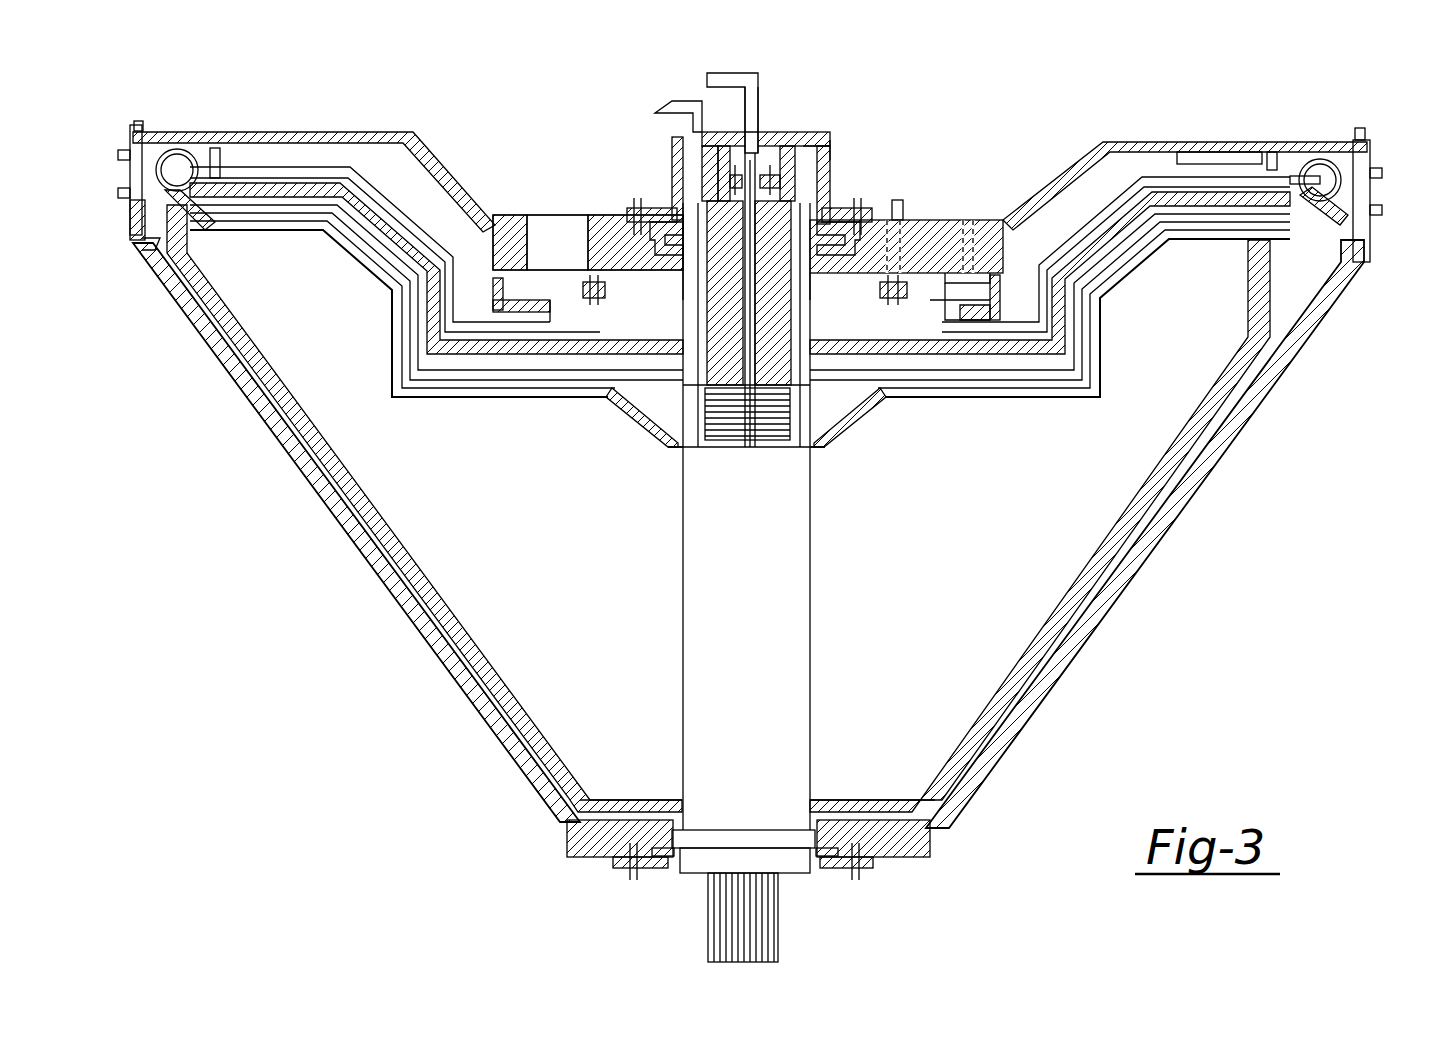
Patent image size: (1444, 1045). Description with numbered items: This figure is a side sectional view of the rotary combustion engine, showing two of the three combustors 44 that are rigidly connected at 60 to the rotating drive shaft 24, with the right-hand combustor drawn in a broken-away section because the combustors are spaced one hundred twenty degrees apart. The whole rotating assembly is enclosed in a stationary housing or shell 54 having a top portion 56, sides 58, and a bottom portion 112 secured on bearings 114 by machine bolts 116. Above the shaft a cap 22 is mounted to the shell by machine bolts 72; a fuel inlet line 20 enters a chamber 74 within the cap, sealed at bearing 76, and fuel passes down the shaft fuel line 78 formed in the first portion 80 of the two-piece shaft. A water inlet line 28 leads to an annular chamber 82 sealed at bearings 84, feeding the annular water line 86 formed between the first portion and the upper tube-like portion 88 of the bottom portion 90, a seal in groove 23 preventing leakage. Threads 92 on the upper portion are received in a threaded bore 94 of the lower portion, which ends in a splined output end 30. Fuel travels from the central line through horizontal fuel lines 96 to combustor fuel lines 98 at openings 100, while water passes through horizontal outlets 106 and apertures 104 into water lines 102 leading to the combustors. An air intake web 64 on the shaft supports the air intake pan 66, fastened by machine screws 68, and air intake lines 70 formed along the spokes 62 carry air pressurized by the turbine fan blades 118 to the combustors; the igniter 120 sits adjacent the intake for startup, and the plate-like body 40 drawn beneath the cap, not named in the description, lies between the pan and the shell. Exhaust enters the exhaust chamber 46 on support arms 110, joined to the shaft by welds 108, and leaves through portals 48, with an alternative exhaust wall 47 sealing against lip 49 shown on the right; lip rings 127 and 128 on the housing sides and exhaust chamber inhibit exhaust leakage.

The fuel inlet line 20 is at (758, 110).
The cap 22 is at (833, 135).
The groove 23 is at (845, 148).
The drive shaft 24 is at (812, 640).
The water inlet line 28 is at (695, 102).
The splined output end 30 is at (780, 955).
The body plate 40 is at (942, 190).
The combustors 44 is at (192, 158).
The exhaust chamber 46 is at (196, 210).
The exhaust wall 47 is at (1270, 152).
The portals 48 is at (125, 172).
The lip 49 is at (1235, 345).
The housing or shell 54 is at (1350, 140).
The top portion 56 is at (398, 136).
The sides 58 is at (383, 612).
The connection 60 is at (690, 340).
The spokes 62 is at (560, 395).
The air intake web 64 is at (880, 215).
The air intake pan 66 is at (1003, 298).
The machine screws 68 is at (600, 298).
The air intake lines 70 is at (462, 218).
The machine bolts 72 is at (645, 212).
The chamber 74 is at (790, 132).
The bearing 76 is at (848, 160).
The shaft fuel line 78 is at (742, 220).
The first portion 80 is at (767, 355).
The annular chamber 82 is at (675, 133).
The bearings 84 is at (660, 195).
The annular water line 86 is at (612, 387).
The upper tube-like portion 88 is at (747, 437).
The bottom portion 90 is at (756, 578).
The threads 92 is at (700, 410).
The threaded bore 94 is at (820, 450).
The horizontal fuel lines 96 is at (788, 380).
The combustor fuel lines 98 is at (480, 397).
The openings 100 is at (673, 452).
The water lines 102 is at (465, 372).
The apertures 104 is at (872, 398).
The horizontal outlets 106 is at (850, 402).
The welds 108 is at (812, 792).
The support arms 110 is at (492, 662).
The bottom portion 112 is at (940, 858).
The bearings 114 is at (668, 862).
The machine bolts 116 is at (627, 876).
The turbine fan blades 118 is at (948, 280).
The igniter 120 is at (937, 238).
The lip ring 127 is at (138, 212).
The lip ring 128 is at (146, 258).